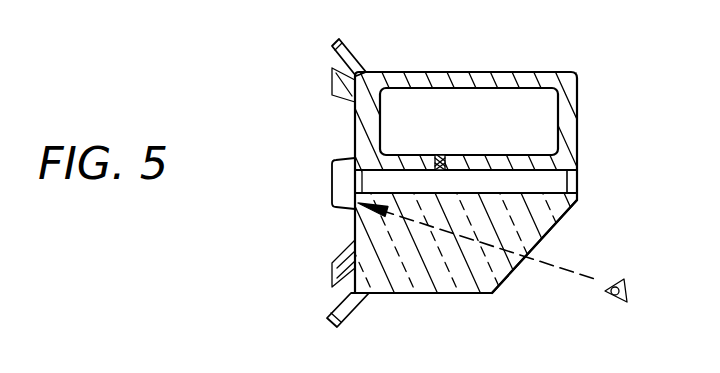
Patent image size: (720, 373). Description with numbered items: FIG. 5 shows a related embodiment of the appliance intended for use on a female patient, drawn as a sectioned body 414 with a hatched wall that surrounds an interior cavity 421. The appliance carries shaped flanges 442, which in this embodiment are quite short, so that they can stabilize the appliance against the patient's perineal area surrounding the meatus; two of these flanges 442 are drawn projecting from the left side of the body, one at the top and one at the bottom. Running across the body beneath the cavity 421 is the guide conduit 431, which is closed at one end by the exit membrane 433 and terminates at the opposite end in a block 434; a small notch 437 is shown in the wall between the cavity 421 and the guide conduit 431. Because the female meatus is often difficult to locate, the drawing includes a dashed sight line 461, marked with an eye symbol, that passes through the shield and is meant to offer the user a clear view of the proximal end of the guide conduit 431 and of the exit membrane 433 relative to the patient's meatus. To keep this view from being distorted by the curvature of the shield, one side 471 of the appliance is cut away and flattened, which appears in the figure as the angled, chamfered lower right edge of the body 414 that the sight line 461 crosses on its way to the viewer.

The housing body 414 is at (452, 295).
The cavity 421 is at (469, 121).
The guide conduit 431 is at (490, 185).
The exit membrane 433 is at (360, 180).
The end block 434 is at (577, 182).
The notch 437 is at (445, 156).
The flange 442 is at (343, 50).
The sight line 461 is at (588, 281).
The cut-away flattened side 471 is at (563, 224).